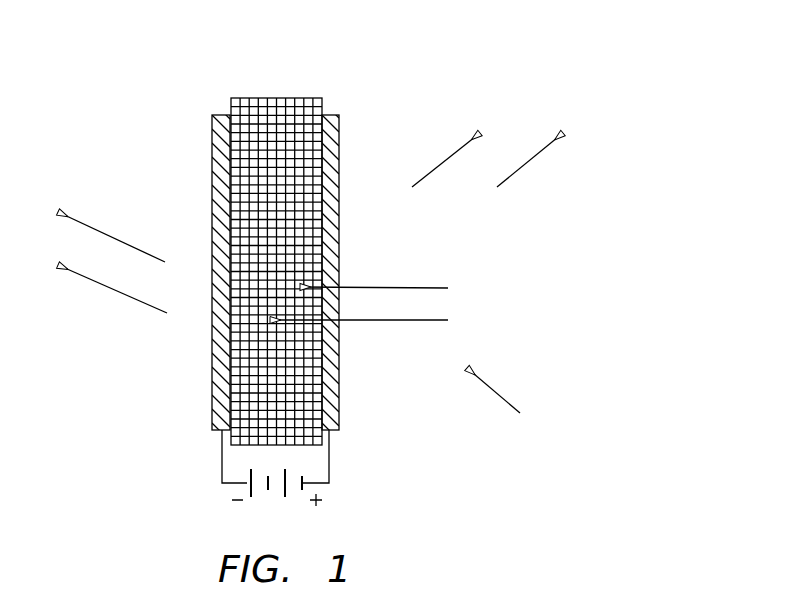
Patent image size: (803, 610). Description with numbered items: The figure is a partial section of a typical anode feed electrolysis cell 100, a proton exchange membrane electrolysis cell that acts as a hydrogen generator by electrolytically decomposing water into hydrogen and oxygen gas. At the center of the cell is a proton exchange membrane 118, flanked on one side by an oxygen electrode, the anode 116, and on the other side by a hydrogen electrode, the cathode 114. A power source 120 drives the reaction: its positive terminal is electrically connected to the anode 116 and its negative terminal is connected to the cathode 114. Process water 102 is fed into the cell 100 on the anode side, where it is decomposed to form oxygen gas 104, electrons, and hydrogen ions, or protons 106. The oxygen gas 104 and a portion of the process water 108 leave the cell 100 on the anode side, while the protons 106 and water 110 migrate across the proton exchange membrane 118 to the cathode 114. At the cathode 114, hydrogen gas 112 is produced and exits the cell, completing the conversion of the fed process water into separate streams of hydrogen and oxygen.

The anode feed electrolysis cell 100 is at (413, 75).
The process water 102 is at (515, 415).
The oxygen gas 104 is at (432, 173).
The hydrogen ions (protons) 106 is at (432, 285).
The portion of the process water 108 is at (540, 148).
The water 110 is at (135, 302).
The hydrogen gas 112 is at (85, 222).
The hydrogen electrode (cathode) 114 is at (225, 115).
The oxygen electrode (anode) 116 is at (330, 113).
The proton exchange membrane 118 is at (268, 100).
The power source 120 is at (342, 462).